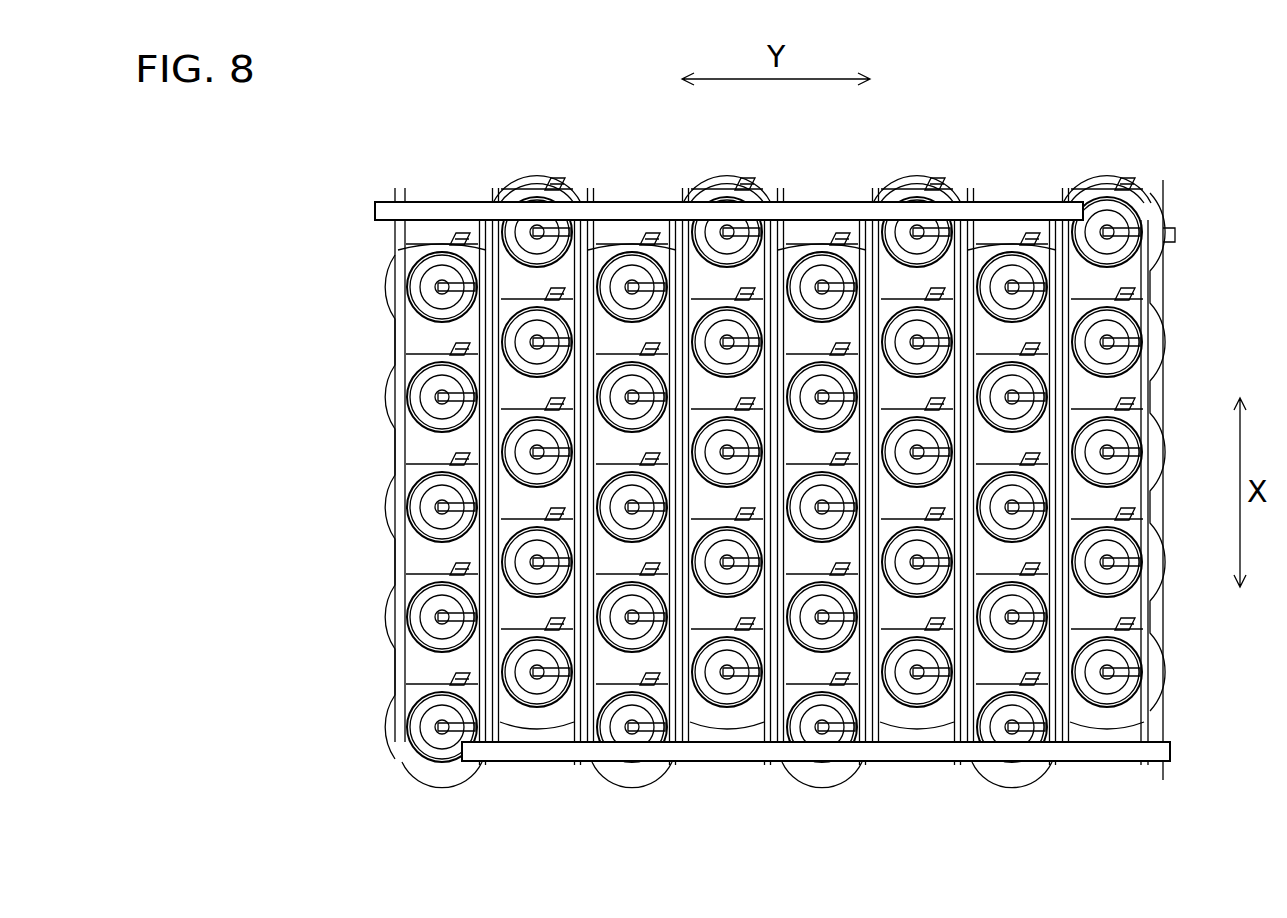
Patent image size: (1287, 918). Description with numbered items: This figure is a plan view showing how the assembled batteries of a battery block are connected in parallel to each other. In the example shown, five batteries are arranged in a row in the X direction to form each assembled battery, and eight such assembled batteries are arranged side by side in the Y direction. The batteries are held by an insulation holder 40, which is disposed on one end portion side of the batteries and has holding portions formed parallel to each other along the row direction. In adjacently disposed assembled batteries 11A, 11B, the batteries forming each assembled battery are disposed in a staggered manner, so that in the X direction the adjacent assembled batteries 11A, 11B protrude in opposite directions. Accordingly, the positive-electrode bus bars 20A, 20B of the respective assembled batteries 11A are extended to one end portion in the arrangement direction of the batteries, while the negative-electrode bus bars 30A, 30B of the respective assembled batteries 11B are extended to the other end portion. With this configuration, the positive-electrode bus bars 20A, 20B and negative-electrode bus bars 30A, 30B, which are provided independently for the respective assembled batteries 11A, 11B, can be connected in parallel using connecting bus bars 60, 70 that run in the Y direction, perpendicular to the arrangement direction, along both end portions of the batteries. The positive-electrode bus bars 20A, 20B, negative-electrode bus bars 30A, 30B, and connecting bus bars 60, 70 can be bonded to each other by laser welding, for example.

The assembled battery 11A is at (443, 802).
The assembled battery 11B is at (544, 166).
The positive-electrode bus bar 20A is at (578, 766).
The positive-electrode bus bar 20B is at (488, 766).
The negative-electrode bus bar 30A is at (399, 190).
The negative-electrode bus bar 30B is at (494, 190).
The insulation holder 40 is at (385, 393).
The connecting bus bar 60 is at (718, 763).
The connecting bus bar 70 is at (810, 201).